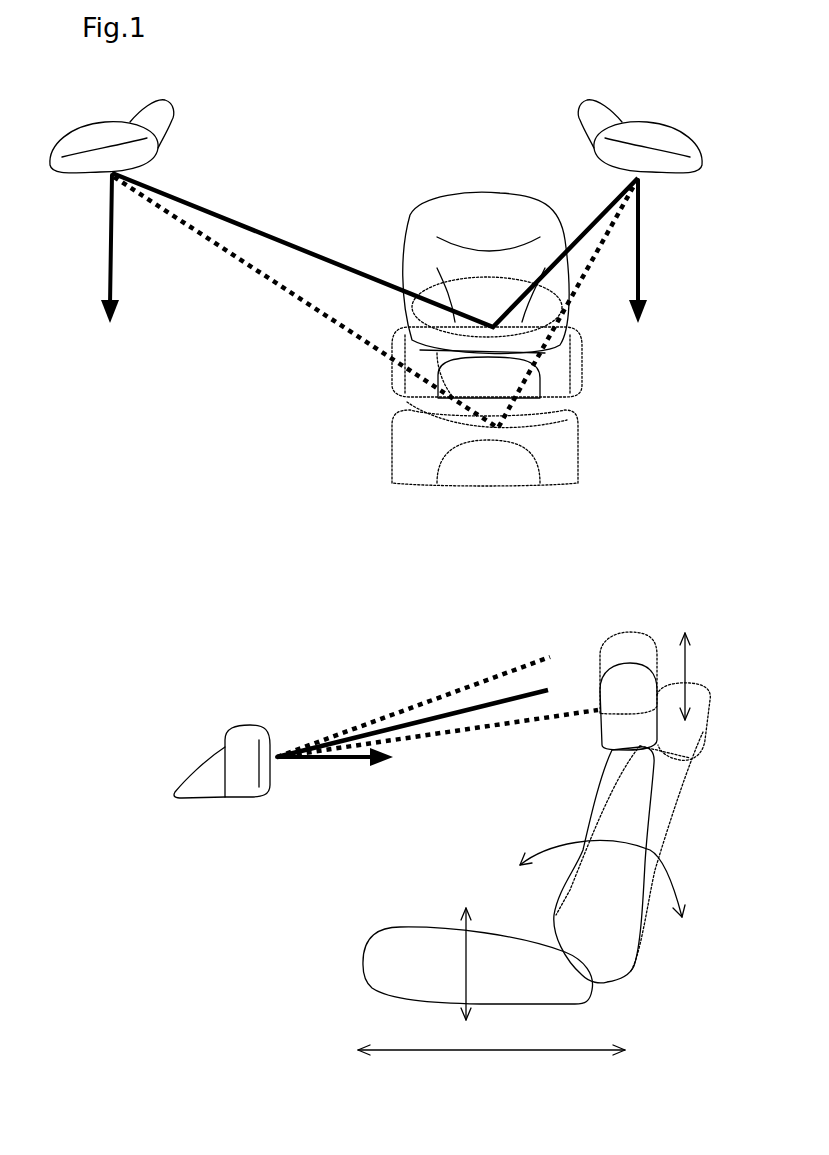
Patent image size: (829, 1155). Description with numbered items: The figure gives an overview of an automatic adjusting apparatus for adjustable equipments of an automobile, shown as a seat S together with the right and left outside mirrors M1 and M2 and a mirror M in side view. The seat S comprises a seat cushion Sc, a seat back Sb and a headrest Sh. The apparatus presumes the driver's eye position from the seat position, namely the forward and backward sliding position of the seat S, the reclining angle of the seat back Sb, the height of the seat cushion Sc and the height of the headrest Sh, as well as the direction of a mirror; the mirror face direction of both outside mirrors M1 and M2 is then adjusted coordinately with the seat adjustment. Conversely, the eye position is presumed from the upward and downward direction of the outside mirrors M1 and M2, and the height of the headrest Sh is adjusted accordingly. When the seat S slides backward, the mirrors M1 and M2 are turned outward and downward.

The outside mirror M1 is at (662, 135).
The outside mirror M2 is at (103, 132).
The mirror M is at (248, 742).
The seat S is at (398, 152).
The seat cushion Sc is at (408, 250).
The seat back Sb is at (398, 375).
The headrest Sh is at (530, 383).